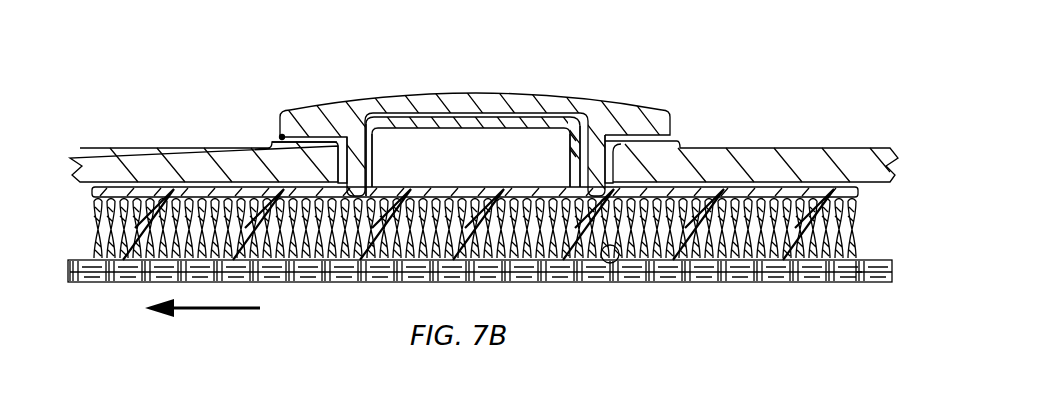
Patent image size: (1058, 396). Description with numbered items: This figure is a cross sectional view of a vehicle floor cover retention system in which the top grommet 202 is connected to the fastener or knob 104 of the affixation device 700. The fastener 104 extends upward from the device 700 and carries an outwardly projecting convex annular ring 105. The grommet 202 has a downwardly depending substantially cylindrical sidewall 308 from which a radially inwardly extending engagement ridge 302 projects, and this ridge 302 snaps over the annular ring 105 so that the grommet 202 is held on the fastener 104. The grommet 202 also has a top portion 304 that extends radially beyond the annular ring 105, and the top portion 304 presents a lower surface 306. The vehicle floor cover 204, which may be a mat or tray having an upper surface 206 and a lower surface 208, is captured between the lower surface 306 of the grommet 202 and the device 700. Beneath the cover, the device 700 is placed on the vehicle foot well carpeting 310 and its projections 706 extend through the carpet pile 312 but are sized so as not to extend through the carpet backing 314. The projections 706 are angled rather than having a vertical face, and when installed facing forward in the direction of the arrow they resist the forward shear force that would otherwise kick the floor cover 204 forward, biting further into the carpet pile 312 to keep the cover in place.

The top grommet 202 is at (462, 93).
The top portion 304 is at (298, 118).
The annular ring 105 is at (599, 130).
The cylindrical sidewall 308 is at (373, 112).
The lower surface 306 is at (281, 136).
The fastener 104 is at (520, 118).
The engagement ridge 302 is at (380, 186).
The vehicle floor cover 204 is at (489, 169).
The upper surface 206 is at (857, 147).
The lower surface 208 is at (872, 185).
The device 700 is at (480, 222).
The projections 706 is at (372, 224).
The carpet pile 312 is at (775, 259).
The vehicle foot well carpeting 310 is at (725, 280).
The carpet backing 314 is at (613, 264).